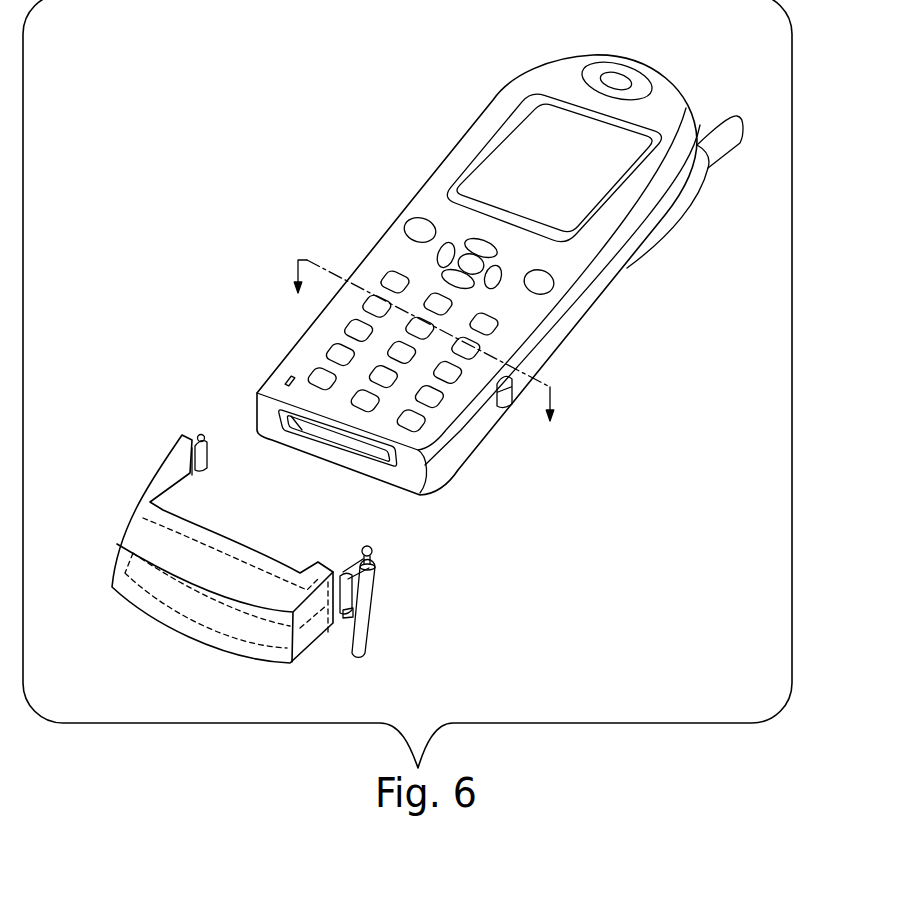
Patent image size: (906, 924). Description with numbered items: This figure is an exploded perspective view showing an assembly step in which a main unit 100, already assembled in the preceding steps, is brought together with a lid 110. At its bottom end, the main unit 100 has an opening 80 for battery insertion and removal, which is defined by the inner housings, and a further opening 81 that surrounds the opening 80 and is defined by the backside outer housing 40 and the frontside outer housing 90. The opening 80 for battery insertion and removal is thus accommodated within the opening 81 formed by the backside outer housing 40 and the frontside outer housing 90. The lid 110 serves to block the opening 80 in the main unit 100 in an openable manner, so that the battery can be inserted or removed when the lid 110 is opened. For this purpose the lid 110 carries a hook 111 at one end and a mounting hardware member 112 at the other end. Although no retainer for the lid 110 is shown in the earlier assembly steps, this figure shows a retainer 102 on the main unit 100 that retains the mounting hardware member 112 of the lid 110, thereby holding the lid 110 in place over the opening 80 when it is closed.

The main unit 100 is at (445, 100).
The backside outer housing 40 is at (466, 468).
The frontside outer housing 90 is at (305, 350).
The retainer 102 is at (510, 405).
The opening for battery insertion/removal 80 is at (381, 459).
The opening 81 is at (305, 441).
The lid 110 is at (110, 527).
The hook 111 is at (203, 435).
The mounting hardware member 112 is at (391, 576).